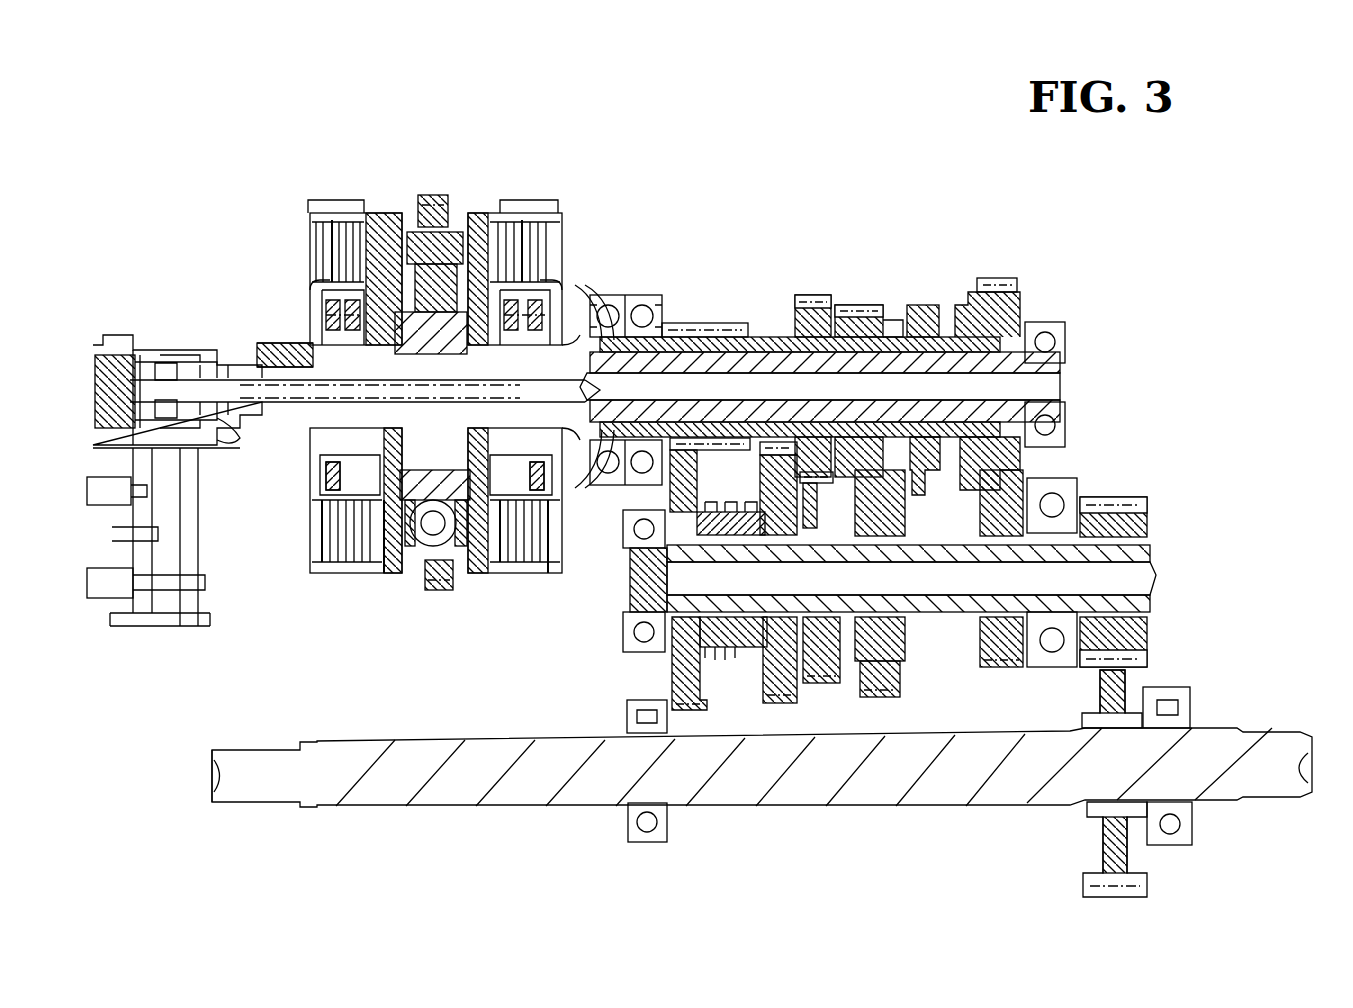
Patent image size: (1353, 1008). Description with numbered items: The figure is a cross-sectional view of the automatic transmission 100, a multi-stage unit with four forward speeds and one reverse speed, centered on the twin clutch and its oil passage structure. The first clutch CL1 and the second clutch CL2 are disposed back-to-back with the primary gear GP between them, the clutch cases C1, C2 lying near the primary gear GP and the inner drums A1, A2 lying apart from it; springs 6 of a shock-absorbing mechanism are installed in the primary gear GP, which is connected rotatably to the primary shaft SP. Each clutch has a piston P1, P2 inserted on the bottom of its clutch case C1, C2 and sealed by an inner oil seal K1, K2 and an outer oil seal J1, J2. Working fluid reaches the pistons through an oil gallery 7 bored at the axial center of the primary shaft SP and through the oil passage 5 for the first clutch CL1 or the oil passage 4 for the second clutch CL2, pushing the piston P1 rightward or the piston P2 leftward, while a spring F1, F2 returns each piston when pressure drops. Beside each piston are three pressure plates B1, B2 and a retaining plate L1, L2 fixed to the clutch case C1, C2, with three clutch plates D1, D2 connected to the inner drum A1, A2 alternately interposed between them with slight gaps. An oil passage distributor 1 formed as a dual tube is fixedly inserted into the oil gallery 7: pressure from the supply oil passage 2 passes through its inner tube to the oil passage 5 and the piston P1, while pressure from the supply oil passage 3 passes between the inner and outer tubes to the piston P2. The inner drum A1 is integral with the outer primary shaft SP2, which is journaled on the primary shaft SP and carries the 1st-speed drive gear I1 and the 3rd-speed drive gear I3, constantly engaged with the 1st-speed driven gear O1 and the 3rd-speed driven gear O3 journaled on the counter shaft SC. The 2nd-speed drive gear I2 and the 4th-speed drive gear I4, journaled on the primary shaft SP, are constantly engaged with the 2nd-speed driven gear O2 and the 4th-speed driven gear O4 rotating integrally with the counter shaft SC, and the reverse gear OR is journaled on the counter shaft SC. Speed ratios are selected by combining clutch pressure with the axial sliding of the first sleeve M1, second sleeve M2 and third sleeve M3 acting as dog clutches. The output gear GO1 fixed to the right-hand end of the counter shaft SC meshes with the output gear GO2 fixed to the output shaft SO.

The automatic transmission 100 is at (166, 82).
The oil passage distributor 1 is at (246, 374).
The supply oil passage 2 is at (130, 455).
The supply oil passage 3 is at (196, 512).
The oil passage 4 is at (355, 374).
The oil passage 5 is at (600, 330).
The springs 6 is at (420, 566).
The oil gallery 7 is at (585, 440).
The retaining plate L2 is at (315, 290).
The clutch plates D2 is at (322, 300).
The inner drum A2 is at (324, 318).
The spring F2 is at (312, 330).
The pressure plates B2 is at (330, 214).
The clutch case C2 is at (345, 214).
The second clutch CL2 is at (372, 194).
The primary gear GP is at (425, 196).
The first clutch CL1 is at (482, 200).
The clutch case C1 is at (525, 214).
The pressure plates B1 is at (540, 214).
The clutch plates D1 is at (568, 262).
The retaining plate L1 is at (553, 300).
The inner drum A1 is at (560, 330).
The spring F1 is at (562, 340).
The 1st-speed drive gear I1 is at (680, 323).
The outer primary shaft SP2 is at (780, 338).
The primary shaft SP is at (706, 323).
The 3rd-speed drive gear I3 is at (817, 297).
The 2nd-speed drive gear I2 is at (866, 307).
The third sleeve M3 is at (934, 306).
The 4th-speed drive gear I4 is at (997, 279).
The inner oil seal K2 is at (318, 466).
The piston P2 is at (345, 571).
The outer oil seal J2 is at (386, 571).
The inner oil seal K1 is at (466, 520).
The piston P1 is at (486, 571).
The outer oil seal J1 is at (506, 571).
The output gear GO1 is at (1105, 499).
The counter shaft SC is at (1150, 572).
The first sleeve M1 is at (725, 648).
The 2nd-speed driven gear O2 is at (886, 662).
The 4th-speed driven gear O4 is at (1005, 668).
The second sleeve M2 is at (880, 698).
The 1st-speed driven gear O1 is at (695, 712).
The reverse gear OR is at (780, 704).
The 3rd-speed driven gear O3 is at (820, 685).
The output shaft SO is at (930, 806).
The output gear GO2 is at (1150, 890).